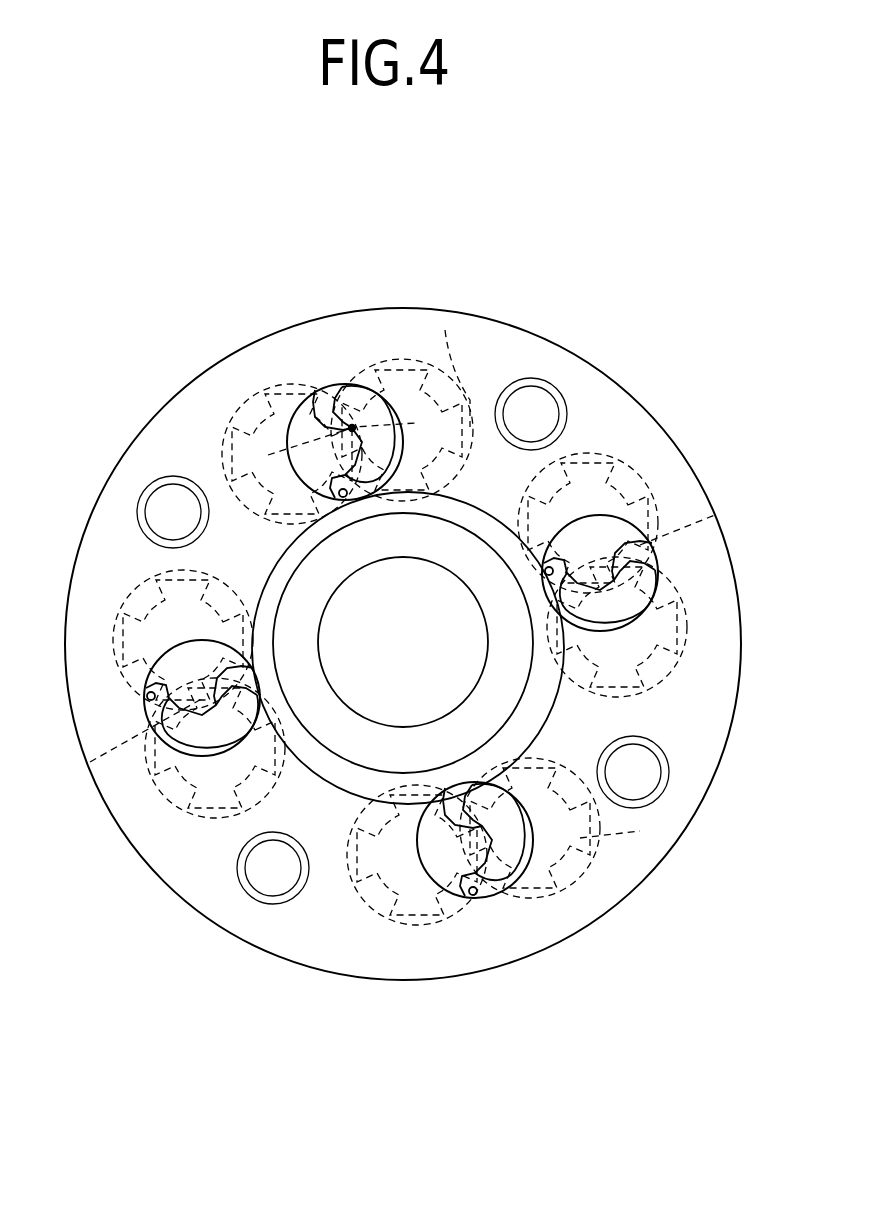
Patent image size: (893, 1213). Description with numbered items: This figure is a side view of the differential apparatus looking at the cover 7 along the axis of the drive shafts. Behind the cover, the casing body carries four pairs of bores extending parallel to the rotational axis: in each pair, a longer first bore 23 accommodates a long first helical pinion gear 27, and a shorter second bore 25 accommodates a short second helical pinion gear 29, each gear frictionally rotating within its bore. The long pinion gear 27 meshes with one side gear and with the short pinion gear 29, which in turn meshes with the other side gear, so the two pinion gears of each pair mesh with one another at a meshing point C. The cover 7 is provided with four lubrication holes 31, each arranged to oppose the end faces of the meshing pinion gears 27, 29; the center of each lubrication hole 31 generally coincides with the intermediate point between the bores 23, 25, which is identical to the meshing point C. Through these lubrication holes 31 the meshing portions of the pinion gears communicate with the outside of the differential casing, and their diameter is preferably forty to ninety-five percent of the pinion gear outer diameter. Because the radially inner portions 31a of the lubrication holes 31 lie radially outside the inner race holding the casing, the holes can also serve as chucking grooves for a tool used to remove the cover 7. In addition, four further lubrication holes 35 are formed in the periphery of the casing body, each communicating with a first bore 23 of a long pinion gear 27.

The cover 7 is at (523, 345).
The first bore 23 is at (452, 400).
The second bore 25 is at (270, 395).
The first helical pinion gear 27 is at (402, 372).
The second helical pinion gear 29 is at (298, 388).
The lubrication hole 31 is at (287, 446).
The radially inner portion 31a is at (257, 688).
The lubrication hole 35 is at (349, 385).
The meshing point C is at (352, 431).